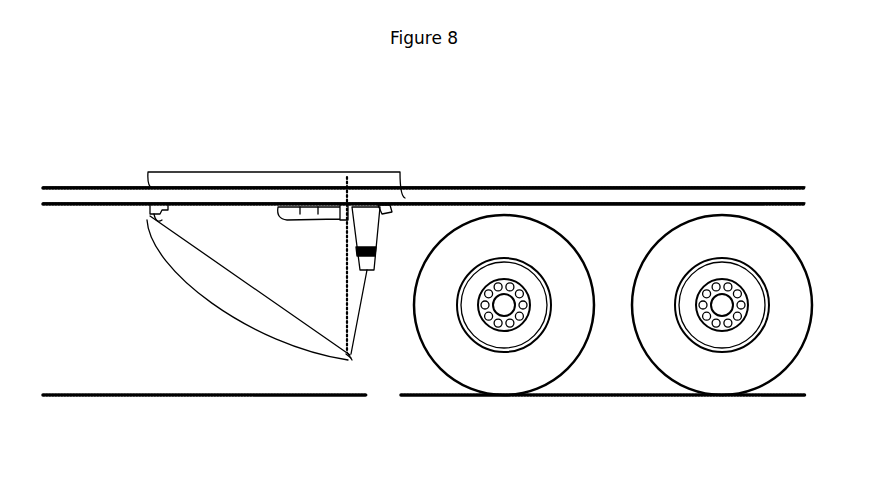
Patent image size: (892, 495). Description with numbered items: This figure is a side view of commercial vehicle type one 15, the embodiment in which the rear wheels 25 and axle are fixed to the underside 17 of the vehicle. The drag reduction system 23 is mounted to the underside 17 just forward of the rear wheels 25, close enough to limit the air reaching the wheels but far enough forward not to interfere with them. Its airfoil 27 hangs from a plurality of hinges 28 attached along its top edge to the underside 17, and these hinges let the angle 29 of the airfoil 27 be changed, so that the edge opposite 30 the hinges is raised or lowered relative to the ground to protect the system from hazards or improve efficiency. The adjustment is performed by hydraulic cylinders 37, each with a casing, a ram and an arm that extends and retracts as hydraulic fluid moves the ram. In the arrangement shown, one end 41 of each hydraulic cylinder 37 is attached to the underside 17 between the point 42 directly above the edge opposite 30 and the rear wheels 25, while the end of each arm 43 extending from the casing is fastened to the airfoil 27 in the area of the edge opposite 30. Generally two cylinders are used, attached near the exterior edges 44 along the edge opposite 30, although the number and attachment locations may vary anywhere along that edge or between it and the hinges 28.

The commercial vehicle type one 15 is at (583, 184).
The underside 17 is at (58, 208).
The drag reduction system 23 is at (275, 172).
The rear wheels 25 is at (679, 363).
The airfoil 27 is at (248, 288).
The plurality of hinges 28 is at (148, 212).
The angle 29 is at (212, 216).
The edge opposite 30 is at (347, 365).
The hydraulic cylinders 37 is at (380, 220).
The one end 41 is at (383, 205).
The point 42 is at (318, 250).
The end of each arm 43 is at (355, 359).
The exterior edges 44 is at (310, 312).